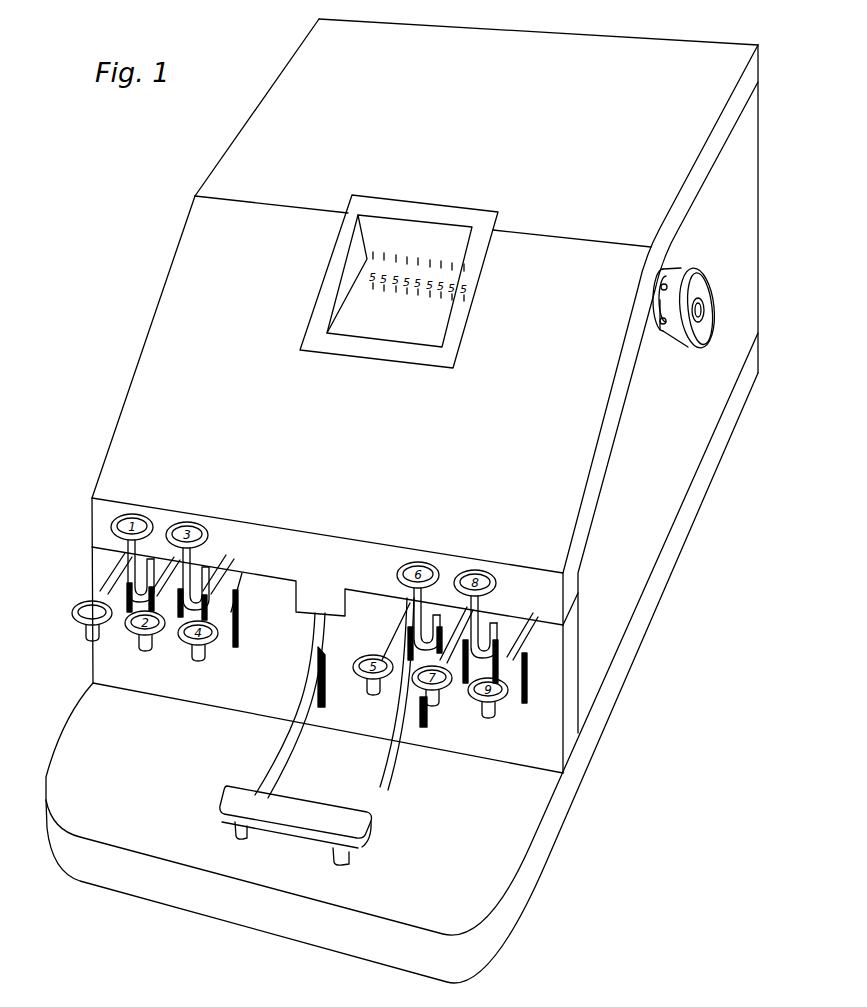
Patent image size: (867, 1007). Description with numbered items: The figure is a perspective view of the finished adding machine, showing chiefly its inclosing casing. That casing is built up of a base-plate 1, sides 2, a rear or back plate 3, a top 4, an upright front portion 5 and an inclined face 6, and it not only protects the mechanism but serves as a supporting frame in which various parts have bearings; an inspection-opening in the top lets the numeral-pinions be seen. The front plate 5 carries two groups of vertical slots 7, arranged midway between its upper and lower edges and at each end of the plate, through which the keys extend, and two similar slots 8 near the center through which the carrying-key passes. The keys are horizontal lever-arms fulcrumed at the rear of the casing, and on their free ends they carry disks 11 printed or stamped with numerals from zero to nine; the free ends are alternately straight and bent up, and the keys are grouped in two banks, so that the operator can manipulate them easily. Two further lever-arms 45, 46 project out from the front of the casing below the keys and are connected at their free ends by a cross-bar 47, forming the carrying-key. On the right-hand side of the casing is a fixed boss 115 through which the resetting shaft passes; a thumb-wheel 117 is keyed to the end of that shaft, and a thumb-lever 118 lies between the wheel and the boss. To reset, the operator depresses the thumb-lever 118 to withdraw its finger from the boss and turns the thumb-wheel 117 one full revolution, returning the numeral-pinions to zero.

The base-plate 1 is at (402, 658).
The sides 2 is at (660, 409).
The rear or back plate 3 is at (609, 35).
The top 4 is at (423, 176).
The upright front portion 5 is at (327, 635).
The inclined face 6 is at (327, 384).
The vertical slots 7 is at (527, 673).
The slots 8 is at (325, 700).
The disks 11 is at (73, 617).
The lever-arm 45 is at (386, 772).
The lever-arm 46 is at (278, 753).
The cross-bar 47 is at (296, 825).
The boss 115 is at (666, 332).
The thumb-wheel 117 is at (691, 287).
The thumb-lever 118 is at (668, 272).